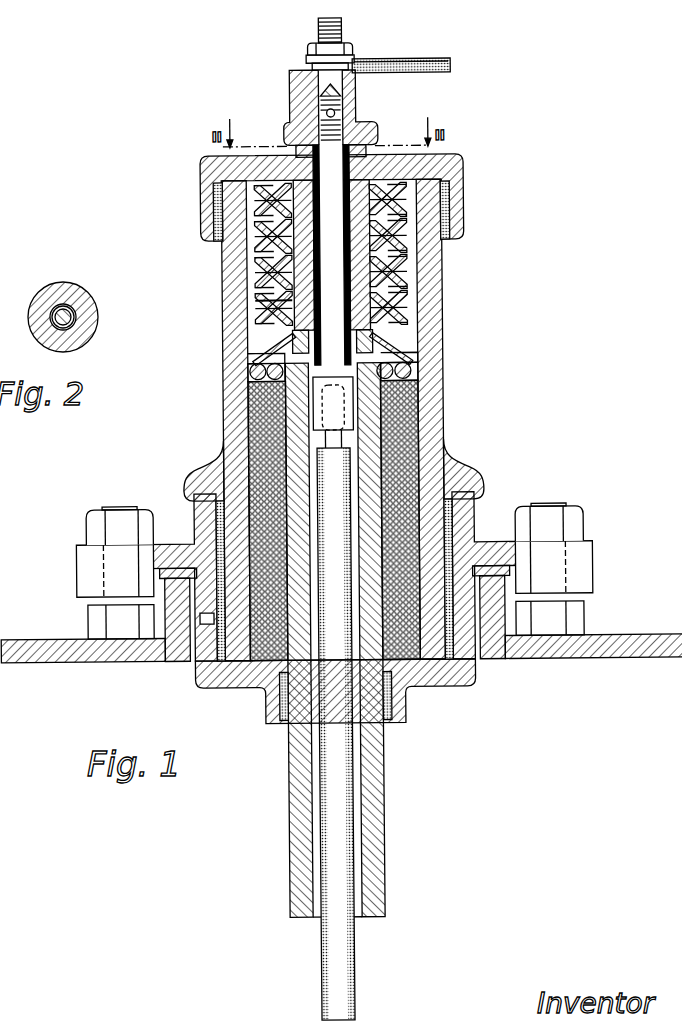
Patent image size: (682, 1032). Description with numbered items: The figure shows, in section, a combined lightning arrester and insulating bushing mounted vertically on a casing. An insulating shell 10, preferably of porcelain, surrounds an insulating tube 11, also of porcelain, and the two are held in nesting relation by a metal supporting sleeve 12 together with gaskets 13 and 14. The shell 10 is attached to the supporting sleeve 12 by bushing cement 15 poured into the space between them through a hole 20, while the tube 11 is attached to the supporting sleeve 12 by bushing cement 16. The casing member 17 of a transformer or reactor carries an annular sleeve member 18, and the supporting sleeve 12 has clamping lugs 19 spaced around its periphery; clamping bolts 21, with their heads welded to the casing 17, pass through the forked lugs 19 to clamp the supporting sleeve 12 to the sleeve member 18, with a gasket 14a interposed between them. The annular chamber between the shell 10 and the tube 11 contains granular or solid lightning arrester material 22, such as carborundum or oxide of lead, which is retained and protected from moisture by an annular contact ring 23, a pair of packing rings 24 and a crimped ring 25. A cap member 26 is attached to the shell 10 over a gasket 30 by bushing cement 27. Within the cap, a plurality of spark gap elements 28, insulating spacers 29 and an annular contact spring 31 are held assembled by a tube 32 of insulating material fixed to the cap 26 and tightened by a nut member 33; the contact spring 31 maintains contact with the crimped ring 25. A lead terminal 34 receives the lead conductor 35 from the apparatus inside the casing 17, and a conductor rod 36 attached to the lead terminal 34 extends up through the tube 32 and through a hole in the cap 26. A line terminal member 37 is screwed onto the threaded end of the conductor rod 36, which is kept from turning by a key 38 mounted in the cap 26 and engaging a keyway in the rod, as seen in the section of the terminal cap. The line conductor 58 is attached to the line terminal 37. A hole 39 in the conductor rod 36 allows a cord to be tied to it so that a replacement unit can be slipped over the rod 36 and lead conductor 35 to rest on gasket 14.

In FIG. 1, the insulating shell 10 is at (452, 456).
In FIG. 1, the insulating tube 11 is at (381, 824).
In FIG. 1, the metal supporting sleeve 12 is at (429, 683).
In FIG. 1, the gasket 13 is at (233, 673).
In FIG. 1, the gasket 14 is at (470, 498).
In FIG. 1, the gasket 14a is at (178, 567).
In FIG. 1, the bushing cement 15 is at (450, 540).
In FIG. 1, the bushing cement 16 is at (392, 722).
In FIG. 1, the casing member 17 is at (655, 638).
In FIG. 1, the annular sleeve member 18 is at (495, 655).
In FIG. 1, the clamping lugs 19 is at (80, 574).
In FIG. 1, the hole 20 is at (205, 625).
In FIG. 1, the clamping bolts 21 is at (118, 505).
In FIG. 1, the lightning arrester material 22 is at (256, 416).
In FIG. 1, the annular contact ring 23 is at (421, 381).
In FIG. 1, the packing rings 24 is at (453, 364).
In FIG. 1, the crimped ring 25 is at (293, 345).
In FIG. 1, the cap member 26 is at (466, 161).
In FIG. 1, the bushing cement 27 is at (467, 197).
In FIG. 1, the spark gap elements 28 is at (383, 209).
In FIG. 1, the insulating spacers 29 is at (281, 268).
In FIG. 1, the gasket 30 is at (203, 189).
In FIG. 1, the annular contact spring 31 is at (380, 342).
In FIG. 1, the tube of insulating material 32 is at (282, 304).
In FIG. 1, the nut member 33 is at (285, 341).
In FIG. 1, the lead terminal 34 is at (333, 403).
In FIG. 1, the lead conductor 35 is at (322, 947).
In FIG. 1, the conductor rod 36 is at (331, 255).
In FIG. 2, the conductor rod 36 is at (72, 306).
In FIG. 1, the line terminal member 37 is at (310, 78).
In FIG. 2, the line terminal member 37 is at (90, 340).
In FIG. 1, the key 38 is at (331, 191).
In FIG. 2, the key 38 is at (55, 311).
In FIG. 1, the hole 39 is at (338, 112).
In FIG. 1, the line conductor 58 is at (422, 60).